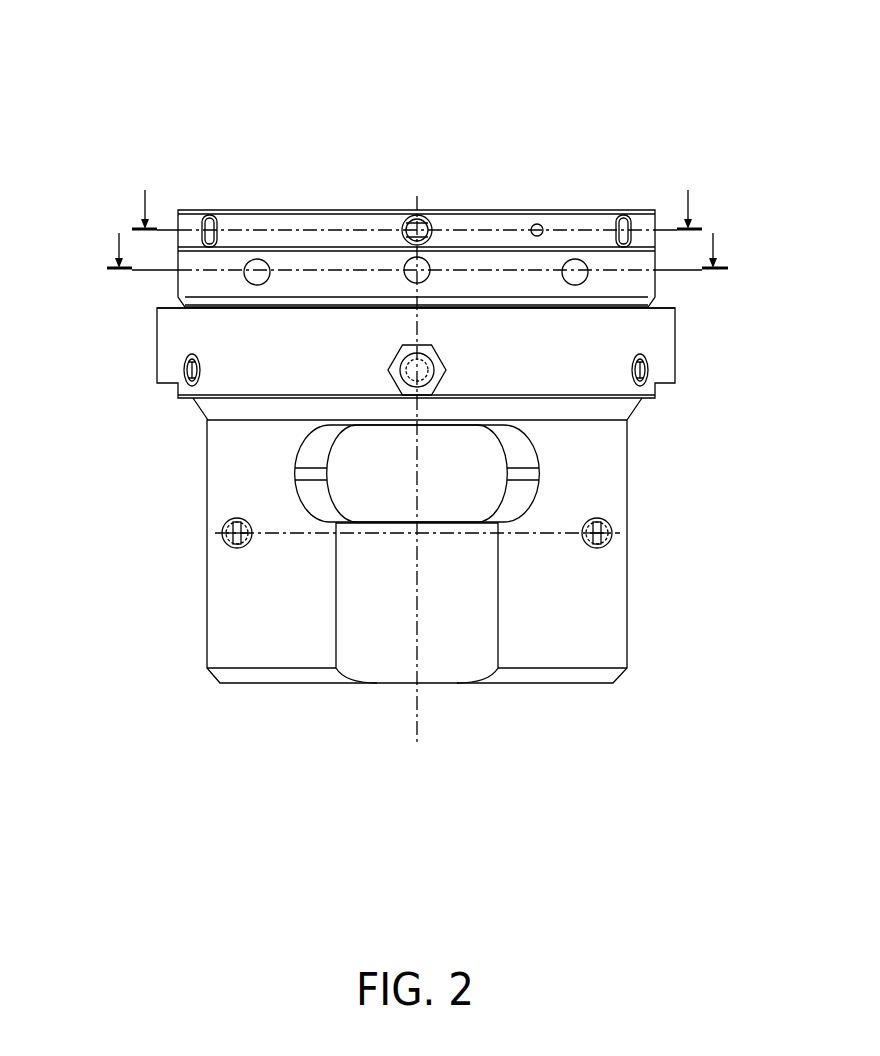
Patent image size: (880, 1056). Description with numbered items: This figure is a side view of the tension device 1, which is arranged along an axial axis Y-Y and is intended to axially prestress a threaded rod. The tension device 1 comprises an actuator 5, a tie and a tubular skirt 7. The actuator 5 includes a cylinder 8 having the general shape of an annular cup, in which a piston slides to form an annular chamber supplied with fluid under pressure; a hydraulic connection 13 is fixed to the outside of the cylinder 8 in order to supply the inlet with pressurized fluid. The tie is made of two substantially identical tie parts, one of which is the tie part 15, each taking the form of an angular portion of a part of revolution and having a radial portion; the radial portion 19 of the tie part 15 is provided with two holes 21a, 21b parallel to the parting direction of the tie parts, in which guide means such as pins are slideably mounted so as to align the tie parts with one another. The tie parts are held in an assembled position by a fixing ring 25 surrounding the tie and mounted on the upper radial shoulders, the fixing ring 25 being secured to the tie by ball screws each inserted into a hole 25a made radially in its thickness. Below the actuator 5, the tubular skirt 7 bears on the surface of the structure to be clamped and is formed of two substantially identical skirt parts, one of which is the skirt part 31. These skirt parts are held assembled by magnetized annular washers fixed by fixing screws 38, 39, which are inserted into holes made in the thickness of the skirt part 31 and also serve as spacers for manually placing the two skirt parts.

The tension device 1 is at (601, 68).
The actuator 5 is at (676, 355).
The tubular skirt 7 is at (627, 600).
The cylinder 8 is at (650, 327).
The hydraulic connection 13 is at (447, 377).
The tie part 15 is at (662, 297).
The radial portion 19 is at (187, 285).
The hole 21a is at (258, 268).
The hole 21b is at (575, 268).
The fixing ring 25 is at (647, 209).
The hole 25a is at (535, 224).
The skirt part 31 is at (598, 478).
The fixing screw 38 is at (223, 538).
The fixing screw 39 is at (607, 542).